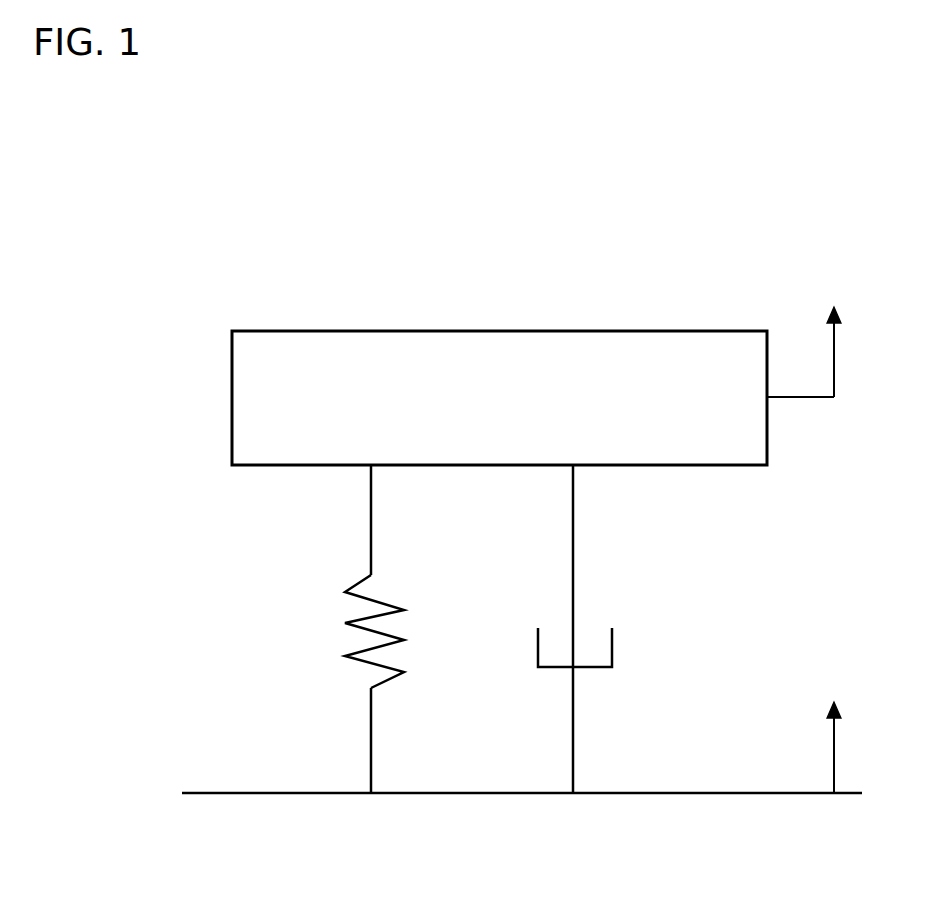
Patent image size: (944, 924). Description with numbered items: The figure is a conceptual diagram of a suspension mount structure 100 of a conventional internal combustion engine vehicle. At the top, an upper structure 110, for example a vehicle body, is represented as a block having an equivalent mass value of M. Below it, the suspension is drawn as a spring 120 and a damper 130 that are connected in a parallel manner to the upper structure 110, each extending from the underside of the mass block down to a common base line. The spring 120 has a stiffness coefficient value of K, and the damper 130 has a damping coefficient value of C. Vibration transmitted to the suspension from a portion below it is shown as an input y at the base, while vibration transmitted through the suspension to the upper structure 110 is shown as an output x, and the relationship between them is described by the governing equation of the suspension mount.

The vibration system model 100 is at (612, 176).
The upper structure 110 is at (499, 377).
The spring 120 is at (393, 629).
The damper 130 is at (616, 629).